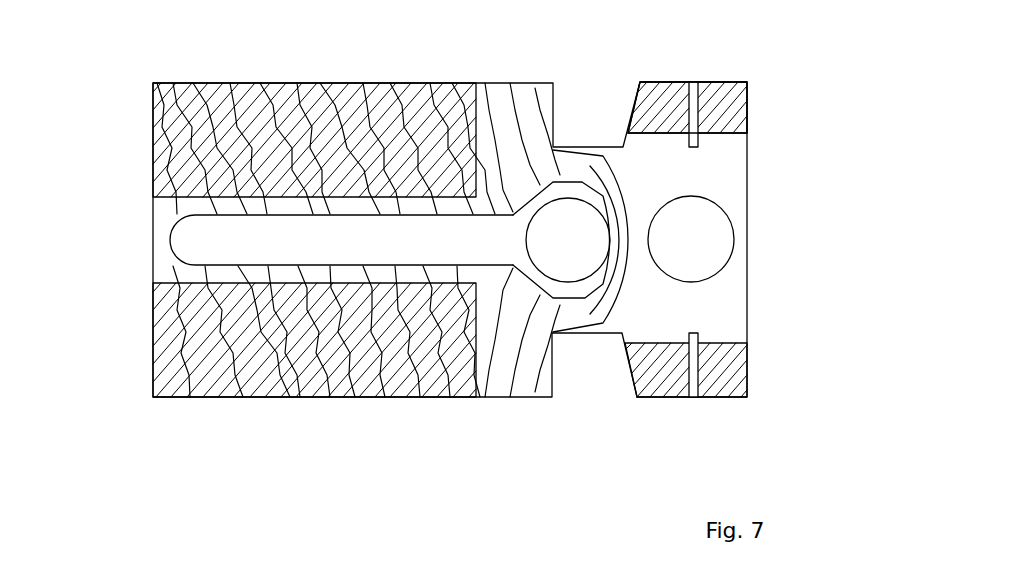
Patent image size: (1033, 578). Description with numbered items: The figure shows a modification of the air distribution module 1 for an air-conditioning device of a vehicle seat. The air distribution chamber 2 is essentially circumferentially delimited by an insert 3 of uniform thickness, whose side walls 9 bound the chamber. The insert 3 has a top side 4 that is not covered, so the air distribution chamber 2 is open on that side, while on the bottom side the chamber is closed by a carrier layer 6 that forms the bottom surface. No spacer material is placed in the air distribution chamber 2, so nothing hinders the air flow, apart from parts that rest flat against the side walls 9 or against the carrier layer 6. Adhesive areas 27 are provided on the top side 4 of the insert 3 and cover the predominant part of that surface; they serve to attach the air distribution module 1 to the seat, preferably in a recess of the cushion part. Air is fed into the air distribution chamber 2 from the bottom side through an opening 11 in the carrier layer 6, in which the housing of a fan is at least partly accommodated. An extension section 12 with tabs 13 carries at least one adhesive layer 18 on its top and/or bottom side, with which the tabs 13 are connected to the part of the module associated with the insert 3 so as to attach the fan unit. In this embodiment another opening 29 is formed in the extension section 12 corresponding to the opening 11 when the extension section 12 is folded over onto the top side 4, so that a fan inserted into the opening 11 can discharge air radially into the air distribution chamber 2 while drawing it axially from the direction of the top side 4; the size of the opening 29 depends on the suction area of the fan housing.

The air distribution module 1 is at (125, 93).
The air distribution chamber 2 is at (346, 240).
The insert 3 is at (493, 132).
The top side 4 is at (166, 279).
The carrier layer 6 is at (200, 240).
The side walls 9 is at (227, 218).
The opening 11 is at (573, 235).
The extension section 12 is at (645, 76).
The tab 13 is at (624, 124).
The adhesive layer 18 is at (718, 112).
The adhesive areas 27 is at (297, 123).
The opening 29 is at (703, 252).